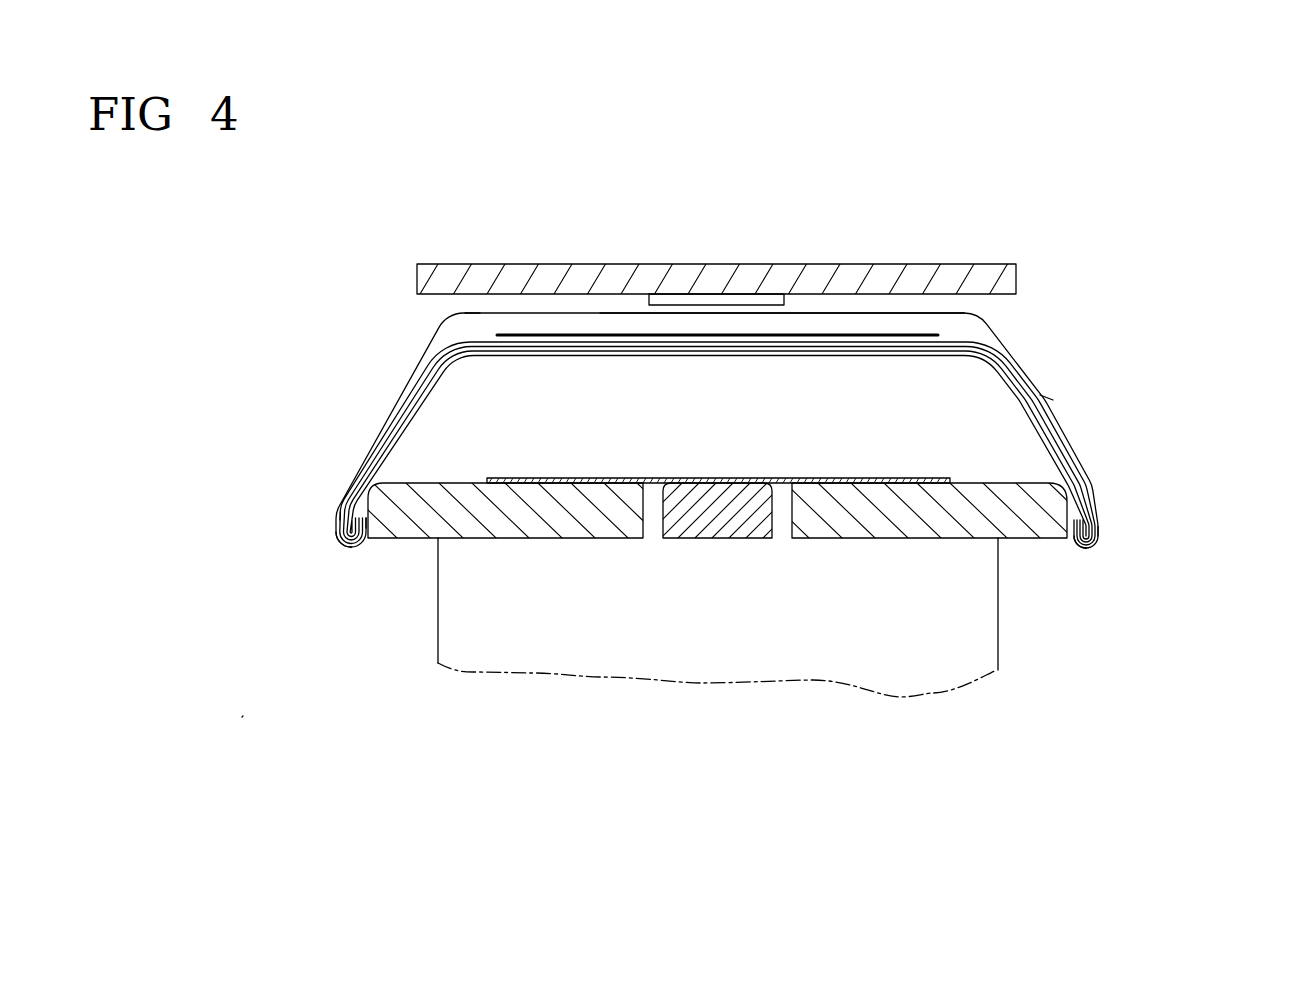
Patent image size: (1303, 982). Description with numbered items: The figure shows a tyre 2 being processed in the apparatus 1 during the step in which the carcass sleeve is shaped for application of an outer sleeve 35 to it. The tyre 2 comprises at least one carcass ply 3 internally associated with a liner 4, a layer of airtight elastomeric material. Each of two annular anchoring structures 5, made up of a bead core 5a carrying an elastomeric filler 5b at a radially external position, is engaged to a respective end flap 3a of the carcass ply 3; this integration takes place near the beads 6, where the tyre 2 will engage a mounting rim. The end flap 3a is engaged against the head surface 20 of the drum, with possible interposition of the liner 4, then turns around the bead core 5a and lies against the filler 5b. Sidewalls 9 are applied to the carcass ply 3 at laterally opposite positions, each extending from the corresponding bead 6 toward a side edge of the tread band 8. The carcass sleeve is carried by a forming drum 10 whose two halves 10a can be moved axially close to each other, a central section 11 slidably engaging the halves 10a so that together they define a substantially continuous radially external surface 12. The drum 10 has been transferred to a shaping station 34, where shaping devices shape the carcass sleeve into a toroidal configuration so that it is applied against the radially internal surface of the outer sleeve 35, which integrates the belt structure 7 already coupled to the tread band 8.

The apparatus 1 is at (242, 717).
The tyre 2 is at (1048, 352).
The carcass ply 3 is at (983, 348).
The end flap 3a is at (343, 493).
The liner 4 is at (1053, 400).
The annular anchoring structure 5 is at (343, 513).
The bead core 5a is at (362, 553).
The elastomeric filler 5b is at (355, 488).
The bead 6 is at (338, 558).
The belt structure 7 is at (892, 333).
The tread band 8 is at (957, 312).
The sidewall 9 is at (393, 400).
The forming drum 10 is at (533, 542).
The half 10a is at (595, 525).
The central section 11 is at (713, 525).
The radially external surface 12 is at (977, 482).
The head surface 20 is at (367, 517).
The shaping station 34 is at (298, 300).
The outer sleeve 35 is at (460, 304).